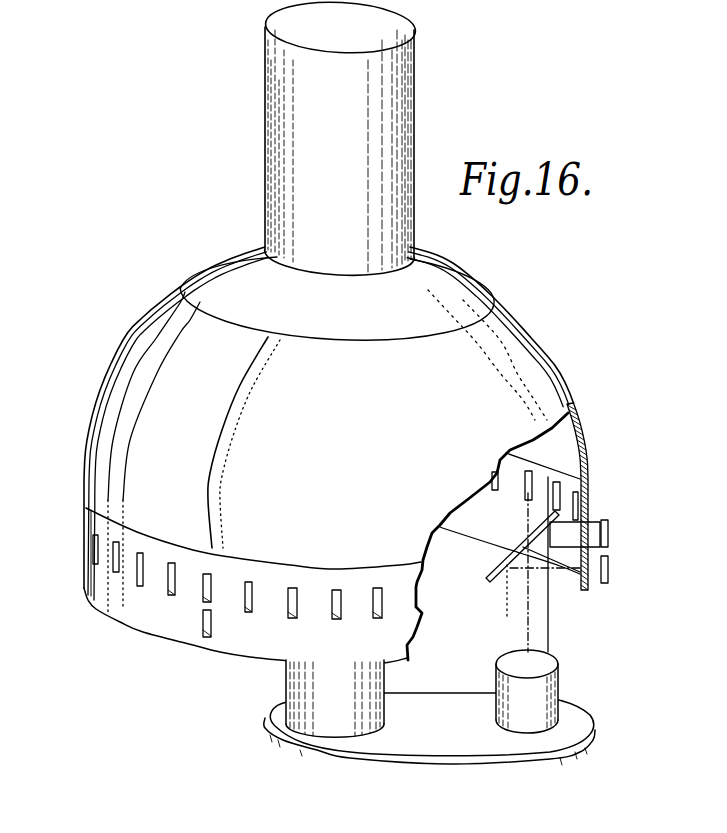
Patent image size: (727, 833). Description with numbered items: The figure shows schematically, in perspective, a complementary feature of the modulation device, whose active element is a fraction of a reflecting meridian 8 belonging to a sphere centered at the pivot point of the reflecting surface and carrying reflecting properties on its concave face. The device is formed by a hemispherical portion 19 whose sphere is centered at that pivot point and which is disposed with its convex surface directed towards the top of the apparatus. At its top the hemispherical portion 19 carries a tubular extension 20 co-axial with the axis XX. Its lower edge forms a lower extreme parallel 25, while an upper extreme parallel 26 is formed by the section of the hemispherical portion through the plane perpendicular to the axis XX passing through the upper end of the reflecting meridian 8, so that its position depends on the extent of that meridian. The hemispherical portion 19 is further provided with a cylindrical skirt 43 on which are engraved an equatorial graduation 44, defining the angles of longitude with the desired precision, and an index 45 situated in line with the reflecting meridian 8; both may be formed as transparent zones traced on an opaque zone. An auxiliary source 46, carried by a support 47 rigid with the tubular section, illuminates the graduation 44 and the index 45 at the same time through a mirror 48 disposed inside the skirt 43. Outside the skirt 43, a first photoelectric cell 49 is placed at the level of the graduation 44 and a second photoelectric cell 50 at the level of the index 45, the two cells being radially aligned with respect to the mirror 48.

The reflecting meridian 8 is at (218, 452).
The hemispherical portion 19 is at (559, 369).
The tubular extension 20 is at (413, 148).
The lower extreme parallel 25 is at (194, 550).
The upper extreme parallel 26 is at (392, 340).
The cylindrical skirt 43 is at (173, 617).
The equatorial graduation 44 is at (140, 581).
The index 45 is at (213, 623).
The auxiliary source 46 is at (533, 690).
The support 47 is at (413, 738).
The mirror 48 is at (528, 550).
The first photoelectric cell 49 is at (610, 533).
The second photoelectric cell 50 is at (610, 568).